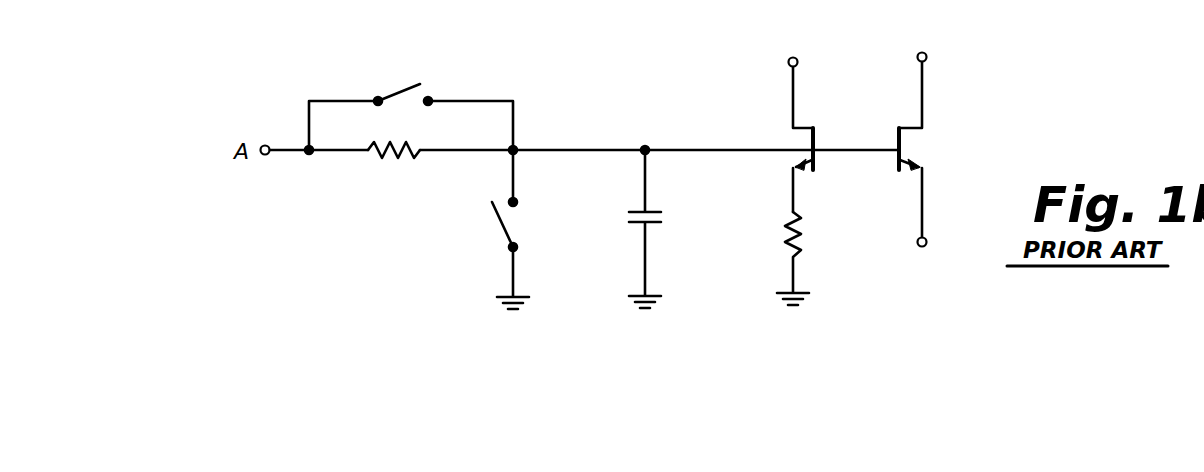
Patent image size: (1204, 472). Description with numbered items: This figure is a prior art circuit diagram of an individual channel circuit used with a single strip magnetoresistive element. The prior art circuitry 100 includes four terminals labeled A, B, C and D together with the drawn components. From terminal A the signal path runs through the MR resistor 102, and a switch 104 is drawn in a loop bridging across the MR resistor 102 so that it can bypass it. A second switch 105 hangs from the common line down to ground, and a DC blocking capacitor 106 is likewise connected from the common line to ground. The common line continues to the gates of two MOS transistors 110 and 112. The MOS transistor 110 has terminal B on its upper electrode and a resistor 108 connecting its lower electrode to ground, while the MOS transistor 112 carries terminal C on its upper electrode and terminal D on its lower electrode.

The prior art circuitry 100 is at (662, 108).
The MR resistor 102 is at (377, 155).
The switch 104 is at (412, 85).
The switch 105 is at (503, 222).
The DC blocking capacitor 106 is at (652, 225).
The resistor 108 is at (797, 246).
The MOS transistor 110 is at (815, 134).
The MOS transistor 112 is at (910, 136).